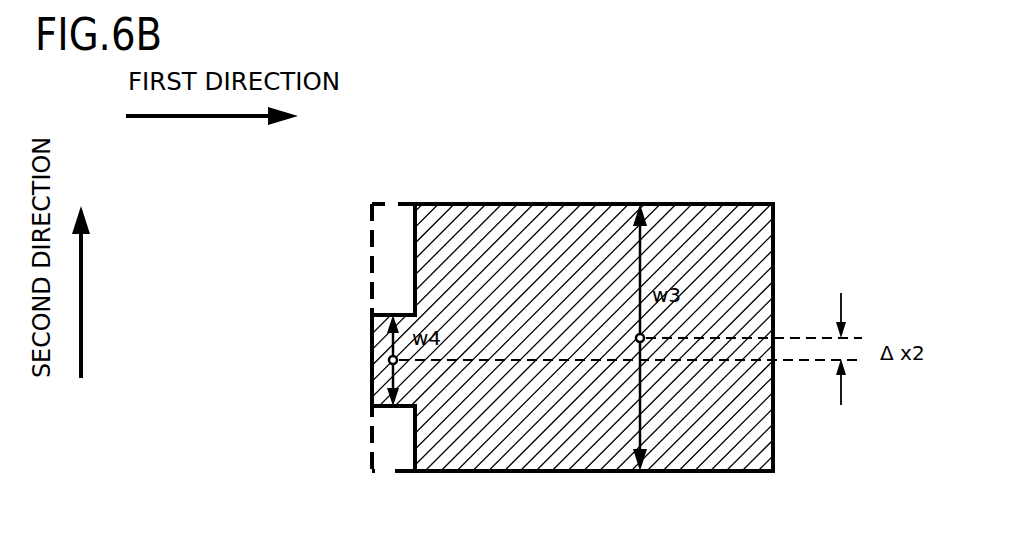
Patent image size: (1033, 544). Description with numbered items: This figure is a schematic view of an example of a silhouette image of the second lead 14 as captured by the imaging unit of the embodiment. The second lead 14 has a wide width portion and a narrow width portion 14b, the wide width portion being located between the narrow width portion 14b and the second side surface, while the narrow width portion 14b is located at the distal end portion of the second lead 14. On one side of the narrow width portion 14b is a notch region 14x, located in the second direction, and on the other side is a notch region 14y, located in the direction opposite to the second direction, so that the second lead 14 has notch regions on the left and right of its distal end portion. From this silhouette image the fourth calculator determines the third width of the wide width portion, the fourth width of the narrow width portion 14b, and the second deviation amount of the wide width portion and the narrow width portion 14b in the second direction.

The second lead 14 is at (820, 134).
The narrow width portion 14b is at (552, 247).
The notch region 14x is at (393, 250).
The notch region 14y is at (398, 428).